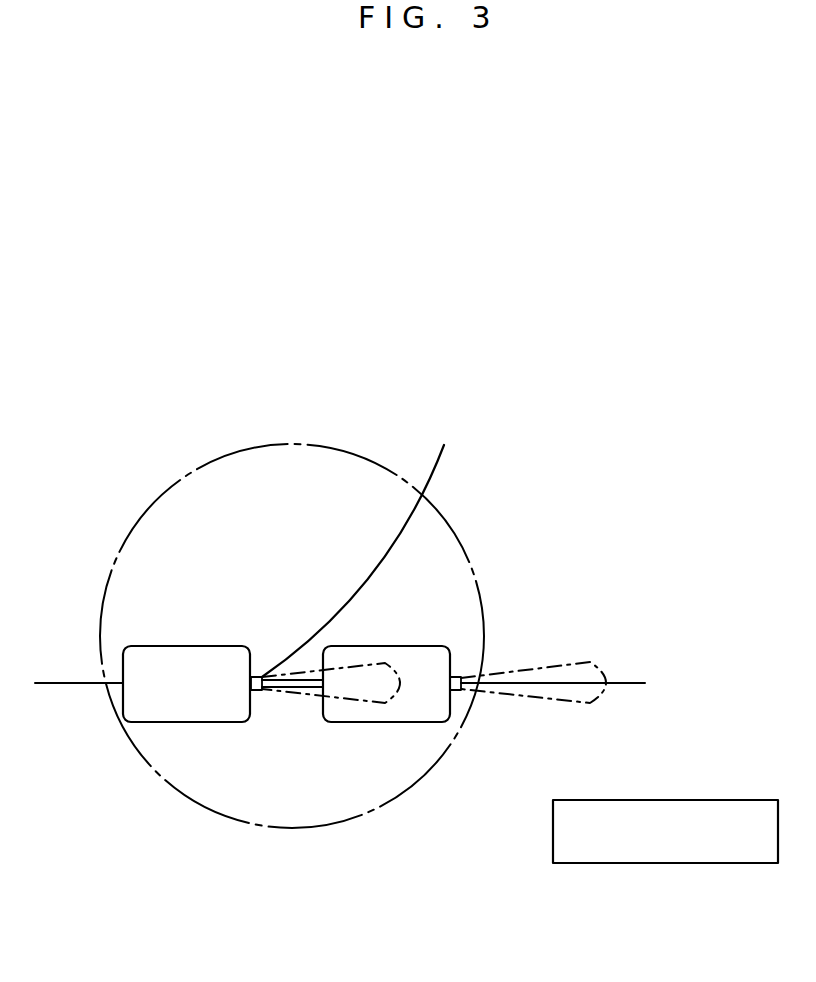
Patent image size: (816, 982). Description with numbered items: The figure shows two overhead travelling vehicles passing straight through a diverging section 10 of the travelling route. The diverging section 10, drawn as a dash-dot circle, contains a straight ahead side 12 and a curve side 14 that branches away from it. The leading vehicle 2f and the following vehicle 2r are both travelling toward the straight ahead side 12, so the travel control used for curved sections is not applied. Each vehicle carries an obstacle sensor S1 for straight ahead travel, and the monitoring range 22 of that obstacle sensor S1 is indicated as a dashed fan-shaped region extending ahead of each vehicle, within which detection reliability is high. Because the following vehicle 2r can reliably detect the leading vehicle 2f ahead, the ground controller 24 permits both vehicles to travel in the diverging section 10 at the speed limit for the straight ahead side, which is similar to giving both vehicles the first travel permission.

The diverging section 10 is at (343, 805).
The straight ahead side 12 is at (283, 688).
The curve side 14 is at (382, 575).
The following vehicle 2r is at (190, 668).
The leading vehicle 2f is at (402, 648).
The obstacle sensor for straight ahead travel S1 is at (256, 676).
The monitoring range 22 is at (557, 668).
The ground controller 24 is at (694, 863).